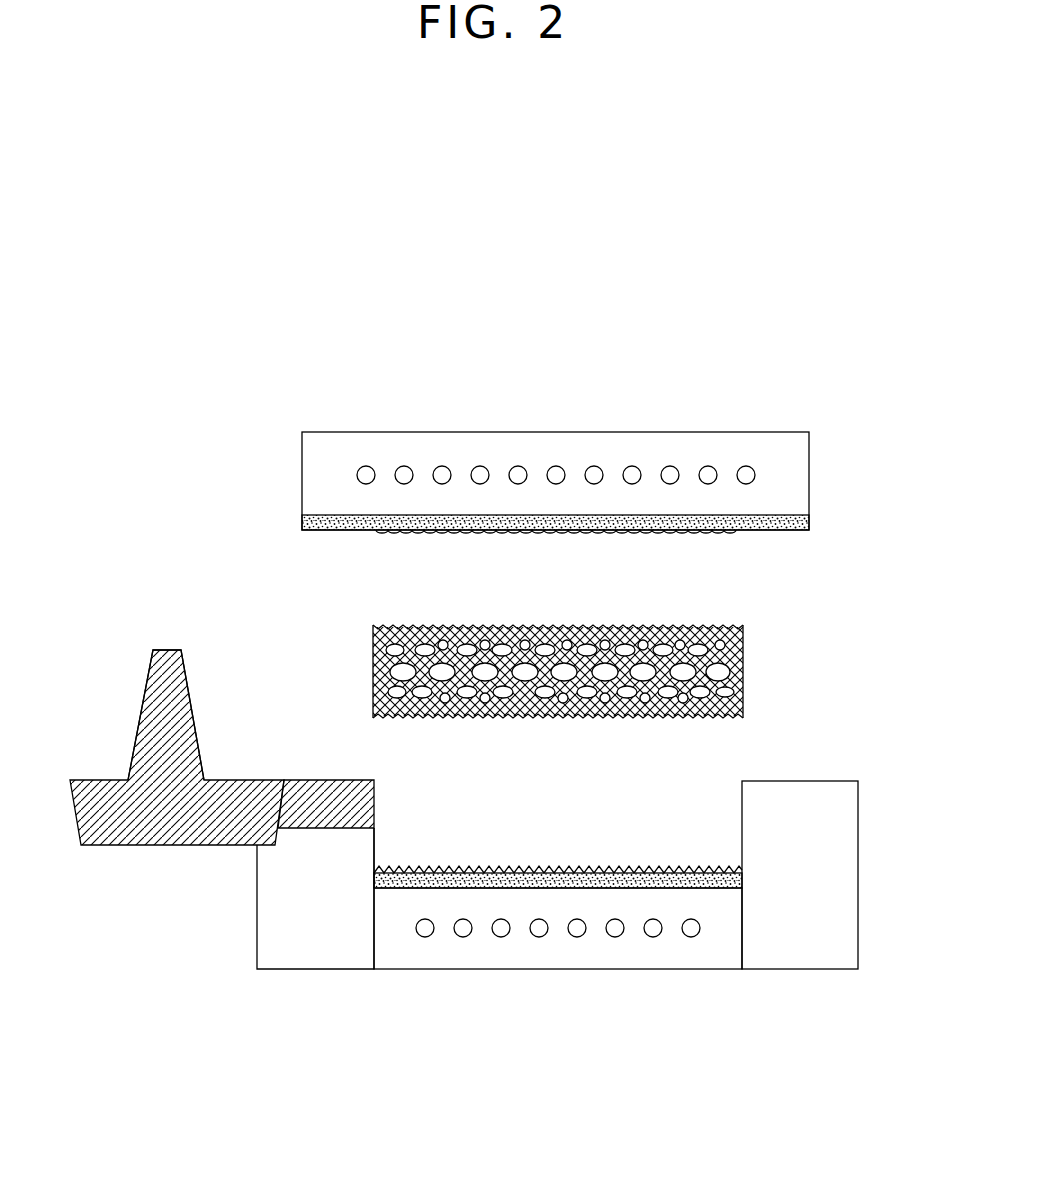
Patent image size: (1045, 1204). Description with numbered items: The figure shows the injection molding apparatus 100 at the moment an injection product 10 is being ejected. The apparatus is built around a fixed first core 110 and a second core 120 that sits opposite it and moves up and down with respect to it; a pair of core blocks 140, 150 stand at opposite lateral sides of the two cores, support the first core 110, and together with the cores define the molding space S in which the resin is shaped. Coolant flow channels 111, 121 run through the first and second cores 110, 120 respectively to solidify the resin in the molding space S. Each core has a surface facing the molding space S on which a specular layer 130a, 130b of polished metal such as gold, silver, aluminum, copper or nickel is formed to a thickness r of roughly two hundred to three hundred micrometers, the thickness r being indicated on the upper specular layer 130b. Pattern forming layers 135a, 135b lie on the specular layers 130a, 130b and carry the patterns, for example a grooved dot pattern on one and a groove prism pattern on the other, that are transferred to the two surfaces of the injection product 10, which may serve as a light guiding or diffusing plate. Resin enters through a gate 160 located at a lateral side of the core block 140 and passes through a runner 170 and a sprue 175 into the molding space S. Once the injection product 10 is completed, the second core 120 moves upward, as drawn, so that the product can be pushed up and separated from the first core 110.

The injection molding apparatus 100 is at (828, 289).
The injection product 10 is at (744, 672).
The first core 110 is at (557, 970).
The coolant flow channel 111 is at (655, 937).
The second core 120 is at (613, 440).
The coolant flow channel 121 is at (668, 465).
The specular layer 130a is at (719, 888).
The specular layer 130b is at (810, 523).
The pattern forming layer 135a is at (412, 868).
The pattern forming layer 135b is at (737, 534).
The core block 140 is at (262, 894).
The core block 150 is at (843, 896).
The gate 160 is at (314, 780).
The runner 170 is at (177, 745).
The sprue 175 is at (163, 650).
The thickness r is at (288, 490).
The molding space S is at (678, 812).